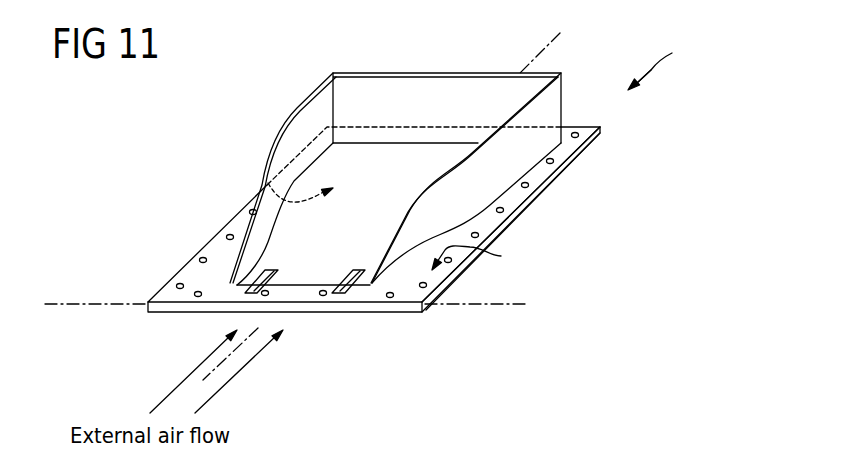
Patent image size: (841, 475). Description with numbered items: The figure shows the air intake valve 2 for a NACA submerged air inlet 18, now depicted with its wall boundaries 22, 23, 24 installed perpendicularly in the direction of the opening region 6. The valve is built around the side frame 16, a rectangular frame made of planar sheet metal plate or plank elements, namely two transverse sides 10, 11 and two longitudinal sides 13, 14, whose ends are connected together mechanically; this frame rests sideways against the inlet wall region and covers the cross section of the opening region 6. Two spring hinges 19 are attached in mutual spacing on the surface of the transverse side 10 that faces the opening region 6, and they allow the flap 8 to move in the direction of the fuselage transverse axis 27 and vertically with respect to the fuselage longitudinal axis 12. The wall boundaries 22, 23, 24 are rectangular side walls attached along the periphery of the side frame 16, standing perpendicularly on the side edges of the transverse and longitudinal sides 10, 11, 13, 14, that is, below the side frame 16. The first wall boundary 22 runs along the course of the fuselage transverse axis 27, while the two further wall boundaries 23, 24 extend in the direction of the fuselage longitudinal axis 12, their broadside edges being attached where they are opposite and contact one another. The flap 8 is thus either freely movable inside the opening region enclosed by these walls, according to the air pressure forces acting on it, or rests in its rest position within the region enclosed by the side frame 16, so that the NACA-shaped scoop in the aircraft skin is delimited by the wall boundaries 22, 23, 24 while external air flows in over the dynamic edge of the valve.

The air intake valve 2 is at (661, 57).
The opening region 6 is at (267, 183).
The flap 8 is at (416, 154).
The transverse side 10 is at (238, 294).
The transverse side 11 is at (408, 138).
The fuselage longitudinal axis 12 is at (274, 312).
The longitudinal side 13 is at (222, 241).
The longitudinal side 14 is at (485, 230).
The side frame 16 is at (480, 255).
The NACA submerged air inlet 18 is at (668, 73).
The spring hinge 19 is at (353, 273).
The first wall boundary 22 is at (449, 73).
The wall boundary 23 is at (553, 115).
The wall boundary 24 is at (297, 108).
The fuselage transverse axis 27 is at (478, 305).